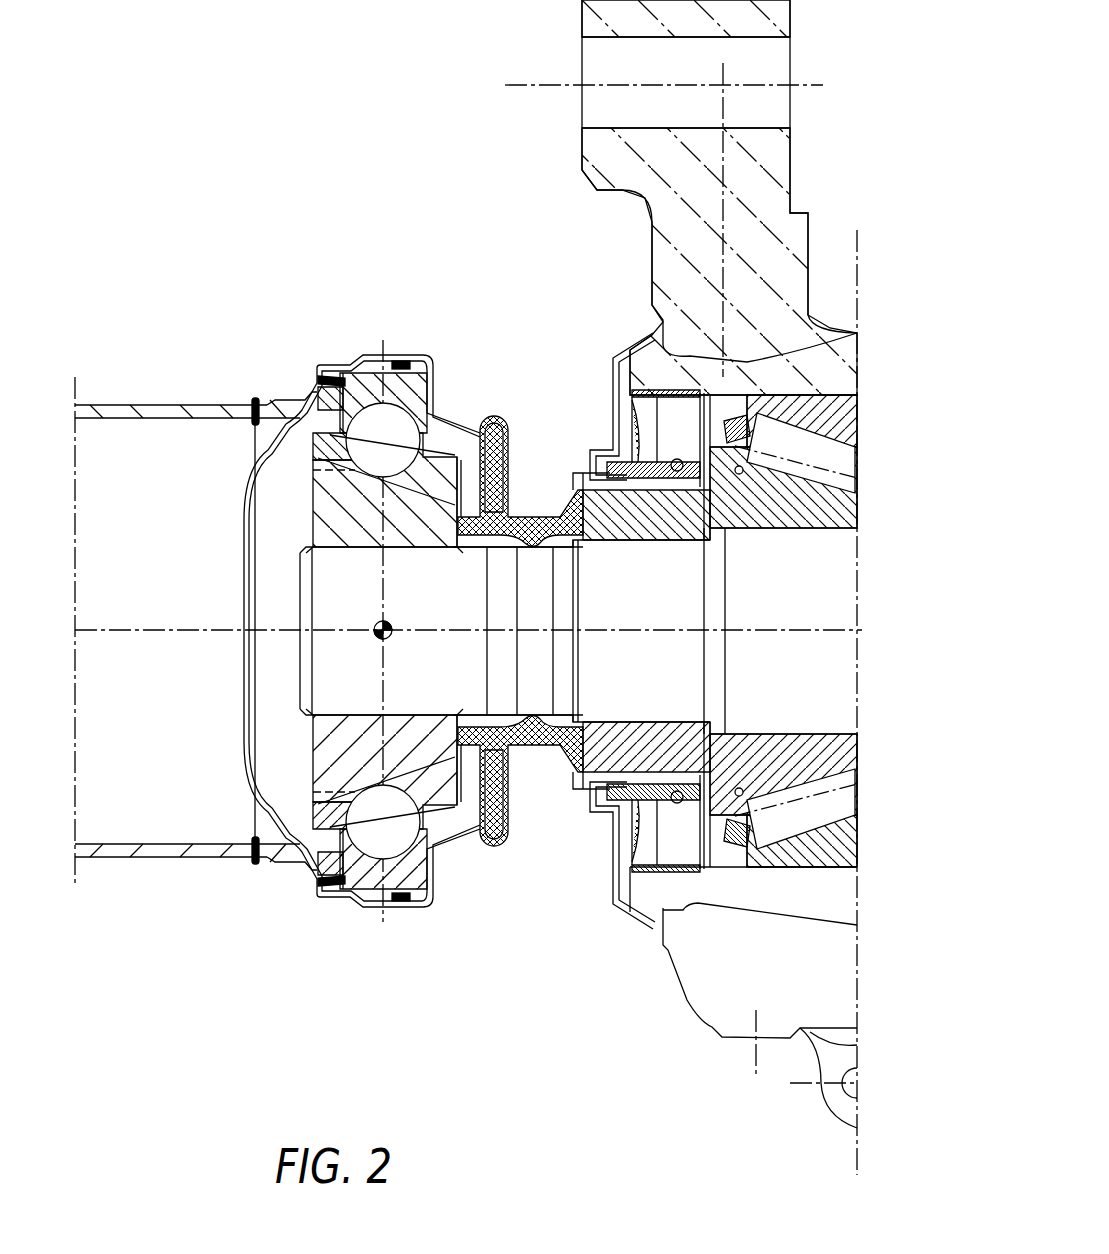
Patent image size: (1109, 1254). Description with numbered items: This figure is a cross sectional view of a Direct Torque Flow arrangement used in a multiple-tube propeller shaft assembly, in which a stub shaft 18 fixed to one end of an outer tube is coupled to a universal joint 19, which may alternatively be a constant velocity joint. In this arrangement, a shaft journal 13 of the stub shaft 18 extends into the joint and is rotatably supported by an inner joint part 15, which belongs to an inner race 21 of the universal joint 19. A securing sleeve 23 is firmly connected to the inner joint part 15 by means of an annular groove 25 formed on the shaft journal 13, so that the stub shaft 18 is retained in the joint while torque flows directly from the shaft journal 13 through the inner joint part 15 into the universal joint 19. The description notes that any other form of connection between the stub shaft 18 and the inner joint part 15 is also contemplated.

The shaft journal 13 is at (820, 568).
The inner joint part 15 is at (317, 508).
The stub shaft 18 is at (809, 515).
The universal joint 19 is at (329, 335).
The inner race 21 is at (465, 478).
The securing sleeve 23 is at (536, 517).
The annular groove 25 is at (527, 693).